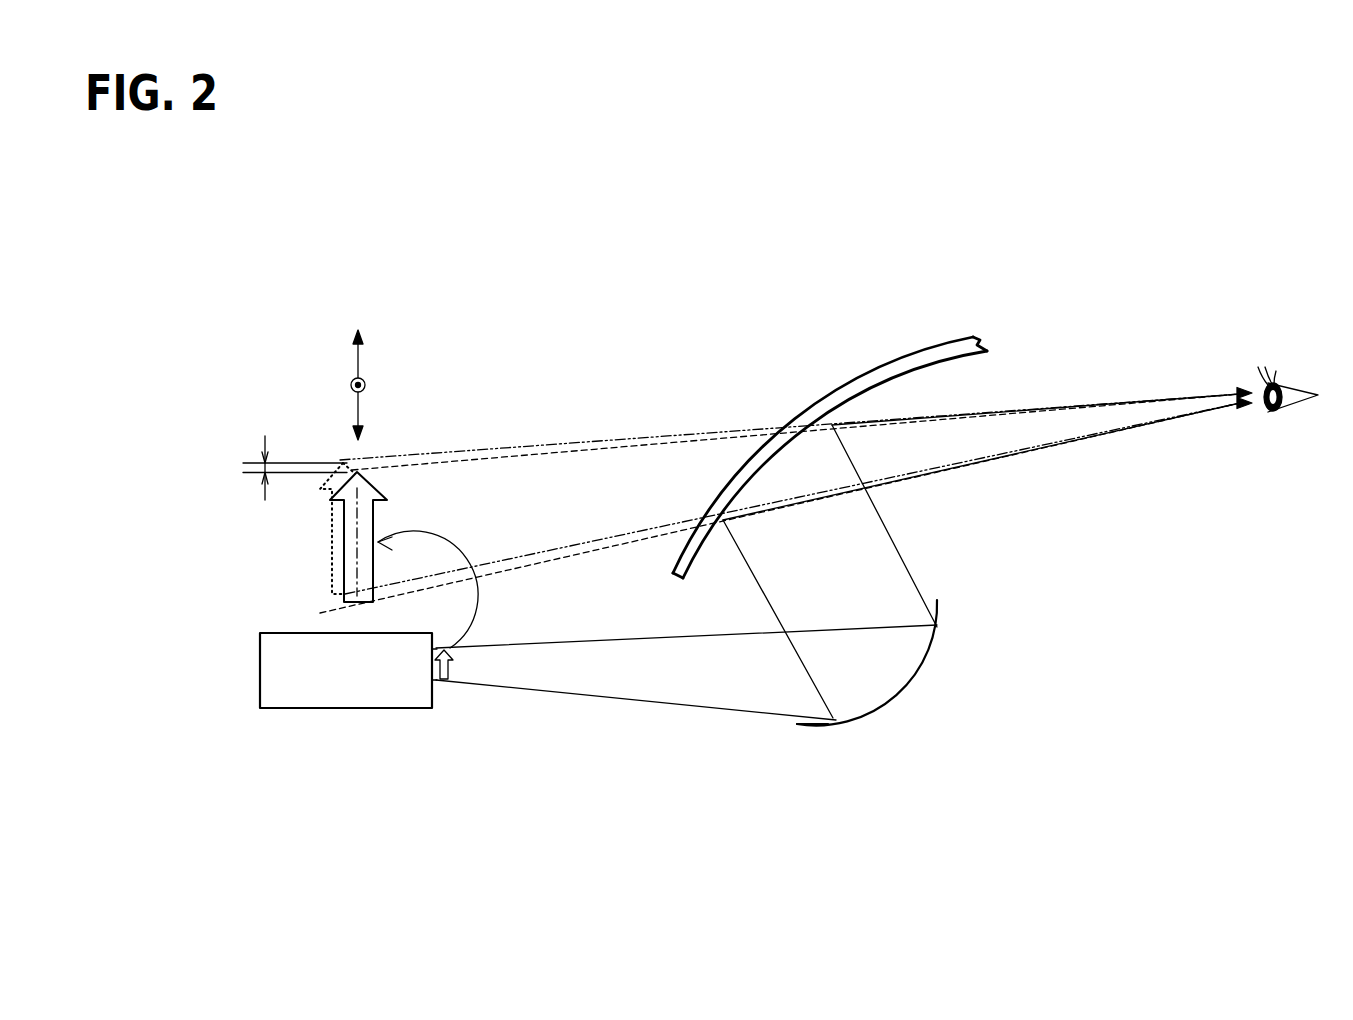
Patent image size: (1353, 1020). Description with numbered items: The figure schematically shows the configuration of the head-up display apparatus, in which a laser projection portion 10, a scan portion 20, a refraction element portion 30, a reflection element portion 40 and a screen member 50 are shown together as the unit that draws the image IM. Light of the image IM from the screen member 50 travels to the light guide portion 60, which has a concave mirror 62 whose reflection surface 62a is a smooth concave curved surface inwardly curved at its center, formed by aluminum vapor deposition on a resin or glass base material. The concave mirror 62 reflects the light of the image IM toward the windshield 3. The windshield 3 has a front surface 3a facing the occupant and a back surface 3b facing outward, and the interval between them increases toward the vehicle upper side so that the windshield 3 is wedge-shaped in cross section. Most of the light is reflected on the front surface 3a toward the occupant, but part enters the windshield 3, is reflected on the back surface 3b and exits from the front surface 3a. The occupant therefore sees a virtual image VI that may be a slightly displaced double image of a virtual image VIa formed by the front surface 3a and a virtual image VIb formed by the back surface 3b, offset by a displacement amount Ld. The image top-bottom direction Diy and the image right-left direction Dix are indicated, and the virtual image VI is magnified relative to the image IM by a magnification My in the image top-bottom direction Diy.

The windshield 3 is at (937, 350).
The front surface 3a is at (903, 387).
The back surface 3b is at (840, 402).
The laser projection portion 10 is at (366, 718).
The scan portion 20 is at (366, 718).
The refraction element portion 30 is at (366, 718).
The reflection element portion 40 is at (366, 718).
The screen member 50 is at (310, 710).
The light guide portion 60 is at (908, 663).
The concave mirror 62 is at (928, 650).
The reflection surface 62a is at (818, 704).
The image IM is at (444, 674).
The virtual image VI is at (245, 528).
The virtual image formed by reflection on the front surface VIa is at (345, 558).
The virtual image formed by reflection on the back surface VIb is at (332, 529).
The displacement amount Ld is at (275, 468).
The image top-bottom direction Diy is at (357, 353).
The image right-left direction Dix is at (350, 386).
The magnification in the image top-bottom direction My is at (560, 589).